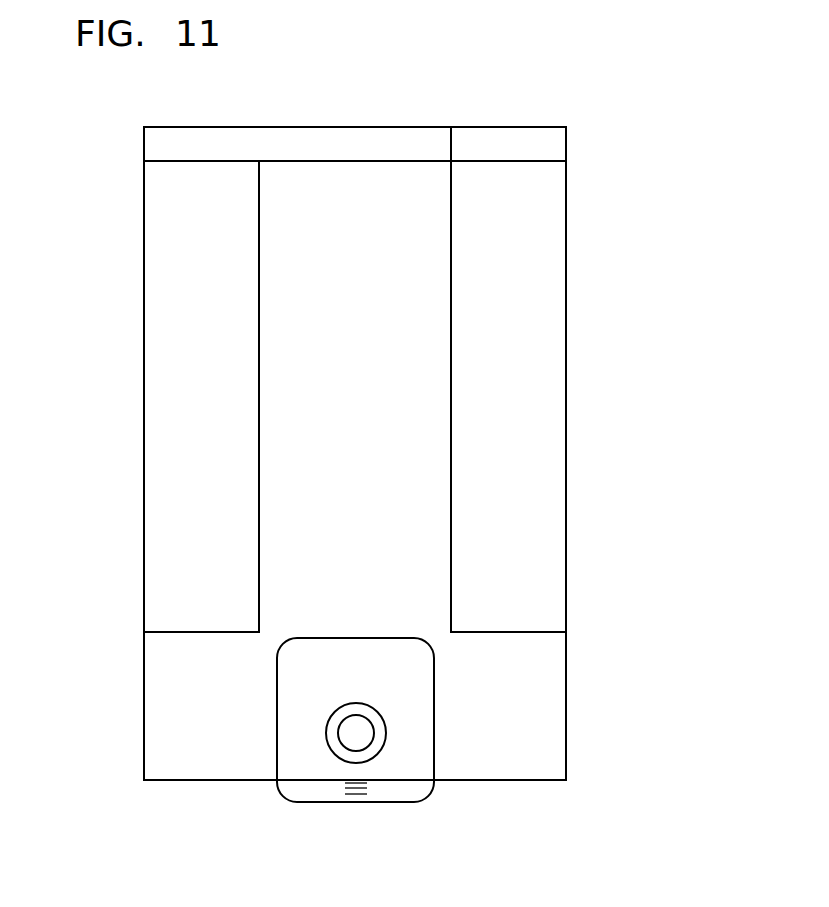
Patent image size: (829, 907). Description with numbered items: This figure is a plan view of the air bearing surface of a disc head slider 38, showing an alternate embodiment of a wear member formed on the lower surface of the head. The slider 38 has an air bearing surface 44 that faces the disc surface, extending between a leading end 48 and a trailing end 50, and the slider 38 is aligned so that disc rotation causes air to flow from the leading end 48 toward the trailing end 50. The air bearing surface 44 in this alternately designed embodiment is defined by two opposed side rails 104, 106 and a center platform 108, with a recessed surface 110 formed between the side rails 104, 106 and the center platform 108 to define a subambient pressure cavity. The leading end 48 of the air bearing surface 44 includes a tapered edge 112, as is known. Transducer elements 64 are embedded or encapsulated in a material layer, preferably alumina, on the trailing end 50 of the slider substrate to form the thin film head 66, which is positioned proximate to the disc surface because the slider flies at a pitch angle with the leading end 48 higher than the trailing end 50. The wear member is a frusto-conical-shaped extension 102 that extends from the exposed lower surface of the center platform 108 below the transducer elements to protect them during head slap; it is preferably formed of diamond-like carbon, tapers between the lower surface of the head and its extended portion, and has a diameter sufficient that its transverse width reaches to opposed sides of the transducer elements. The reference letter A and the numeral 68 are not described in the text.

The slider 38 is at (586, 340).
The air bearing surface 44 is at (509, 312).
The leading end 48 is at (304, 127).
The trailing end 50 is at (498, 782).
The transducer elements 64 is at (370, 789).
The thin film head 66 is at (322, 794).
The corner of control unit 68 is at (283, 796).
The frusto-conical-shaped extension 102 is at (359, 695).
The side rail 104 is at (178, 502).
The side rail 106 is at (553, 447).
The center platform 108 is at (290, 697).
The recessed surface 110 is at (378, 392).
The tapered edge 112 is at (502, 161).
The axis A is at (377, 712).